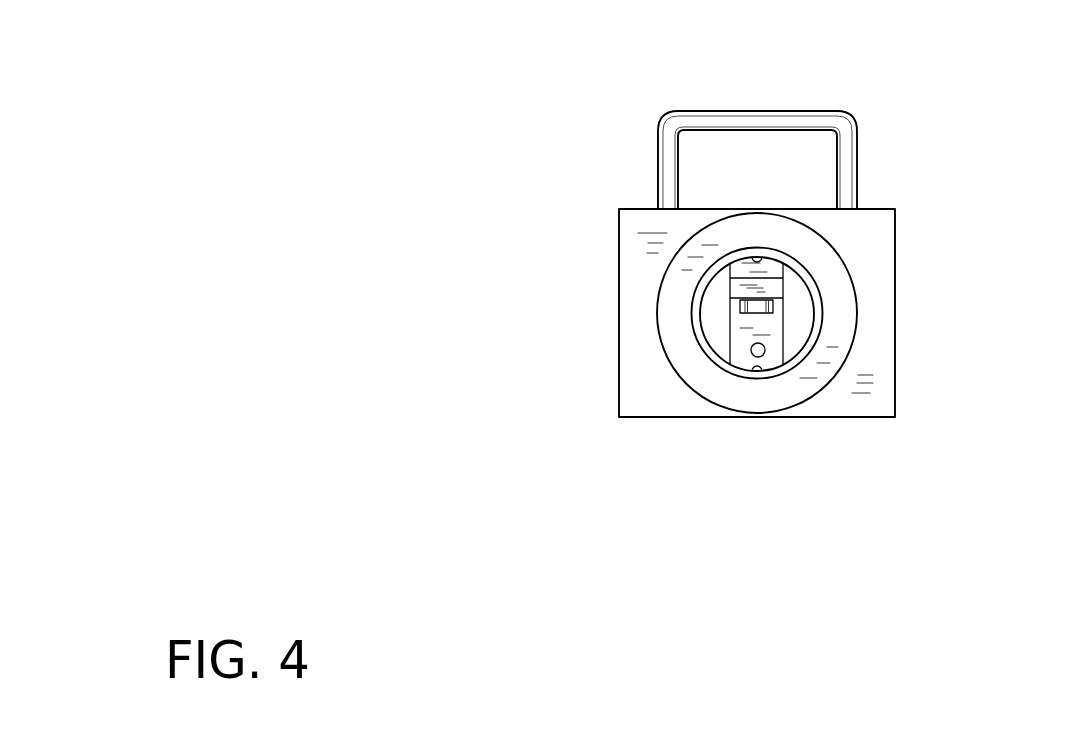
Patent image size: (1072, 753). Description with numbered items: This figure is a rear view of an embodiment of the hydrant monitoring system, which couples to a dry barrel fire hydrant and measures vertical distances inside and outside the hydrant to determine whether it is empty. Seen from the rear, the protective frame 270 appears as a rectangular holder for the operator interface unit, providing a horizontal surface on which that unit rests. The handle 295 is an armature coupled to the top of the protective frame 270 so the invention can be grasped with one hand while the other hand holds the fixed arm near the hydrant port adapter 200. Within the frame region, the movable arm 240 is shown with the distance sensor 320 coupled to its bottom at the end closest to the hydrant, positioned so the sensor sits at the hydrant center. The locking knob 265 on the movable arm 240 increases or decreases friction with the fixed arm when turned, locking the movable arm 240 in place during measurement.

The hydrant port adapter 200 is at (818, 395).
The movable arm 240 is at (737, 293).
The locking knob 265 is at (757, 350).
The protective frame 270 is at (887, 248).
The handle 295 is at (817, 121).
The distance sensor 320 is at (767, 312).